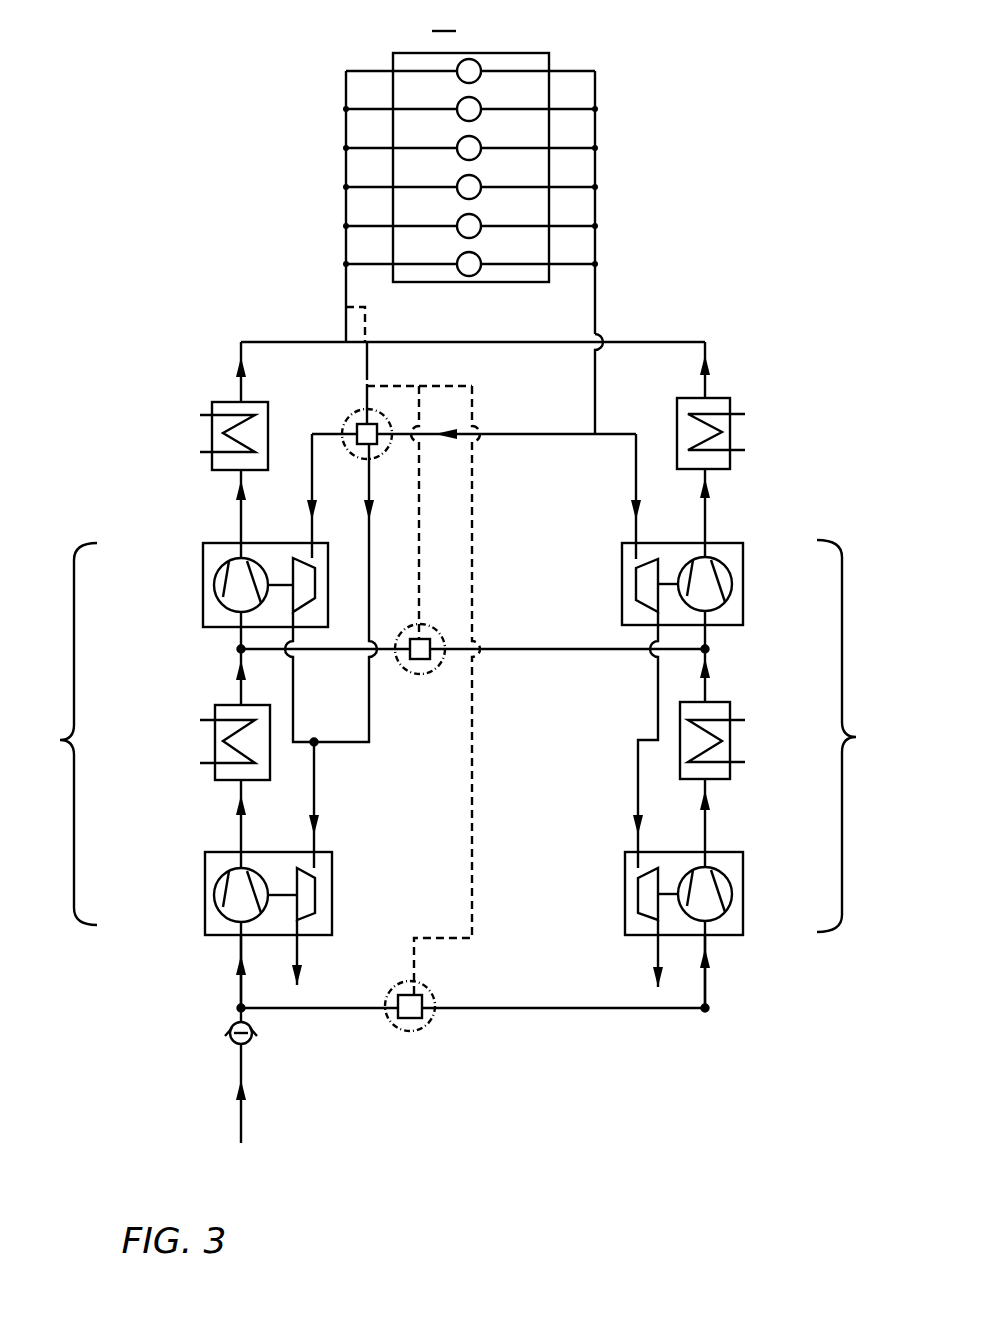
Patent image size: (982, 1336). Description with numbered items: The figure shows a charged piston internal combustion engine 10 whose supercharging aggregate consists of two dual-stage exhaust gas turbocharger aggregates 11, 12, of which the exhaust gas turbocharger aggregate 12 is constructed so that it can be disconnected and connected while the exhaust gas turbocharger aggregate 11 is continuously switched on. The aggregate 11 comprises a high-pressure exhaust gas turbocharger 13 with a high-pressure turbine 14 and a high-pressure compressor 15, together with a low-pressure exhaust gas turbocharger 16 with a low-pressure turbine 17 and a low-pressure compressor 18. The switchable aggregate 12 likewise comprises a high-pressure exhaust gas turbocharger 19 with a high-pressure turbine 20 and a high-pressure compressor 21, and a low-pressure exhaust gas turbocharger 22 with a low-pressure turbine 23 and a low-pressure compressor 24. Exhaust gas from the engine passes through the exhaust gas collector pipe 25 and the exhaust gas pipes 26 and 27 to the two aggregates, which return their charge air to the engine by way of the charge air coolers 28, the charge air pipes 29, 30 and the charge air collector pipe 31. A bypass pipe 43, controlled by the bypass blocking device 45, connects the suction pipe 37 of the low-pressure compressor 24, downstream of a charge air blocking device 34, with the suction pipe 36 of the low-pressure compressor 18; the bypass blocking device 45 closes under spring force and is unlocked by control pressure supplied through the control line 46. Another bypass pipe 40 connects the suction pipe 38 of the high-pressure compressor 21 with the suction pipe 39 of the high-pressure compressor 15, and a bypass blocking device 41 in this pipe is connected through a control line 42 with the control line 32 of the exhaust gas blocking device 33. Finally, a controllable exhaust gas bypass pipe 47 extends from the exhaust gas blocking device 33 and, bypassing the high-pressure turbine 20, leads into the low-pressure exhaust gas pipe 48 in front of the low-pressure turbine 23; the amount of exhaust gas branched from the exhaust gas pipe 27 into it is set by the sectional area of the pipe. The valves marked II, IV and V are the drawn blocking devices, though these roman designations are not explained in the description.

The piston internal combustion engine 10 is at (540, 63).
The exhaust gas turbocharger aggregate 11 is at (856, 736).
The exhaust gas turbocharger aggregate 12 is at (57, 734).
The high-pressure exhaust gas turbocharger 13 is at (738, 532).
The high-pressure turbine 14 is at (648, 582).
The high-pressure compressor 15 is at (712, 590).
The low-pressure exhaust gas turbocharger 16 is at (742, 836).
The low-pressure turbine 17 is at (648, 890).
The low-pressure compressor 18 is at (712, 897).
The high-pressure exhaust gas turbocharger 19 is at (208, 532).
The high-pressure turbine 20 is at (313, 583).
The high-pressure compressor 21 is at (236, 585).
The low-pressure exhaust gas turbocharger 22 is at (210, 839).
The low-pressure turbine 23 is at (318, 890).
The low-pressure compressor 24 is at (236, 894).
The exhaust gas collector pipe 25 is at (595, 290).
The exhaust gas pipe 26 is at (613, 434).
The exhaust gas pipe 27 is at (346, 434).
The charge air cooler 28 is at (222, 410).
The charge air pipe 29 is at (645, 342).
The charge air pipe 30 is at (286, 342).
The charge air collector pipe 31 is at (346, 268).
The control line 32 is at (368, 362).
The exhaust gas blocking device 33 is at (365, 450).
The charge air blocking device 34 is at (232, 1035).
The suction pipe 36 is at (708, 1002).
The suction pipe 37 is at (240, 972).
The suction pipe 38 is at (239, 649).
The suction pipe 39 is at (707, 647).
The bypass pipe 40 is at (321, 652).
The bypass blocking device 41 is at (423, 662).
The control line 42 is at (418, 604).
The bypass pipe 43 is at (368, 1010).
The bypass blocking device 45 is at (413, 1020).
The control line 46 is at (473, 790).
The exhaust gas bypass pipe 47 is at (380, 744).
The low-pressure exhaust gas pipe 48 is at (319, 770).
The valve II is at (431, 988).
The valve IV is at (433, 622).
The valve V is at (381, 460).